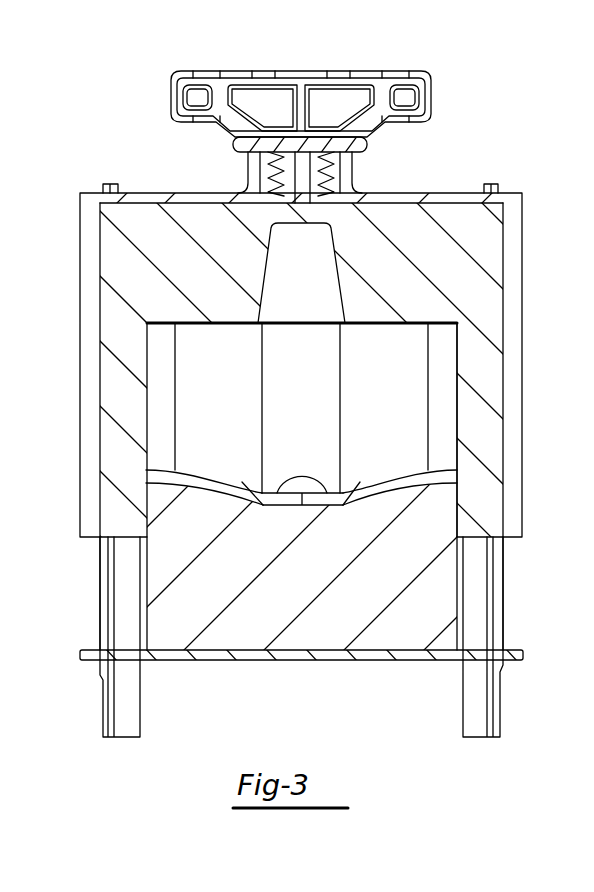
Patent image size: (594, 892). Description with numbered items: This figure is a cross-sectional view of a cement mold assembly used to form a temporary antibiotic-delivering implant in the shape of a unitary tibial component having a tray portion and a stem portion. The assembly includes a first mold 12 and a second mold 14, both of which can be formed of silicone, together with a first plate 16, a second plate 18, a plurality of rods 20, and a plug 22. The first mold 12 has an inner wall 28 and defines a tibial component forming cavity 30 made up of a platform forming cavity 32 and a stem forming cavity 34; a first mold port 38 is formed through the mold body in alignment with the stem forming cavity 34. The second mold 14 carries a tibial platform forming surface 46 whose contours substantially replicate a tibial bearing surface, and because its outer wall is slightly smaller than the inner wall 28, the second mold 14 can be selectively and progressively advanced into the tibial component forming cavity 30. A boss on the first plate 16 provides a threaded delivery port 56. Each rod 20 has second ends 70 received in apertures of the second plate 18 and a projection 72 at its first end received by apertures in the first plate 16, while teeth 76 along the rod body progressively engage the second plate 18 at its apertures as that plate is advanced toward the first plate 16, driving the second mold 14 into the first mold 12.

The first mold 12 is at (512, 280).
The second mold 14 is at (157, 552).
The first plate 16 is at (446, 193).
The second plate 18 is at (403, 662).
The rods 20 is at (127, 596).
The plug 22 is at (353, 71).
The inner wall 28 is at (147, 355).
The tibial component forming cavity 30 is at (442, 408).
The platform forming cavity 32 is at (314, 420).
The stem forming cavity 34 is at (312, 292).
The first mold port 38 is at (288, 196).
The tibial platform forming surface 46 is at (192, 466).
The threaded delivery port 56 is at (322, 164).
The second ends 70 is at (124, 712).
The projection 72 is at (110, 183).
The teeth 76 is at (100, 624).